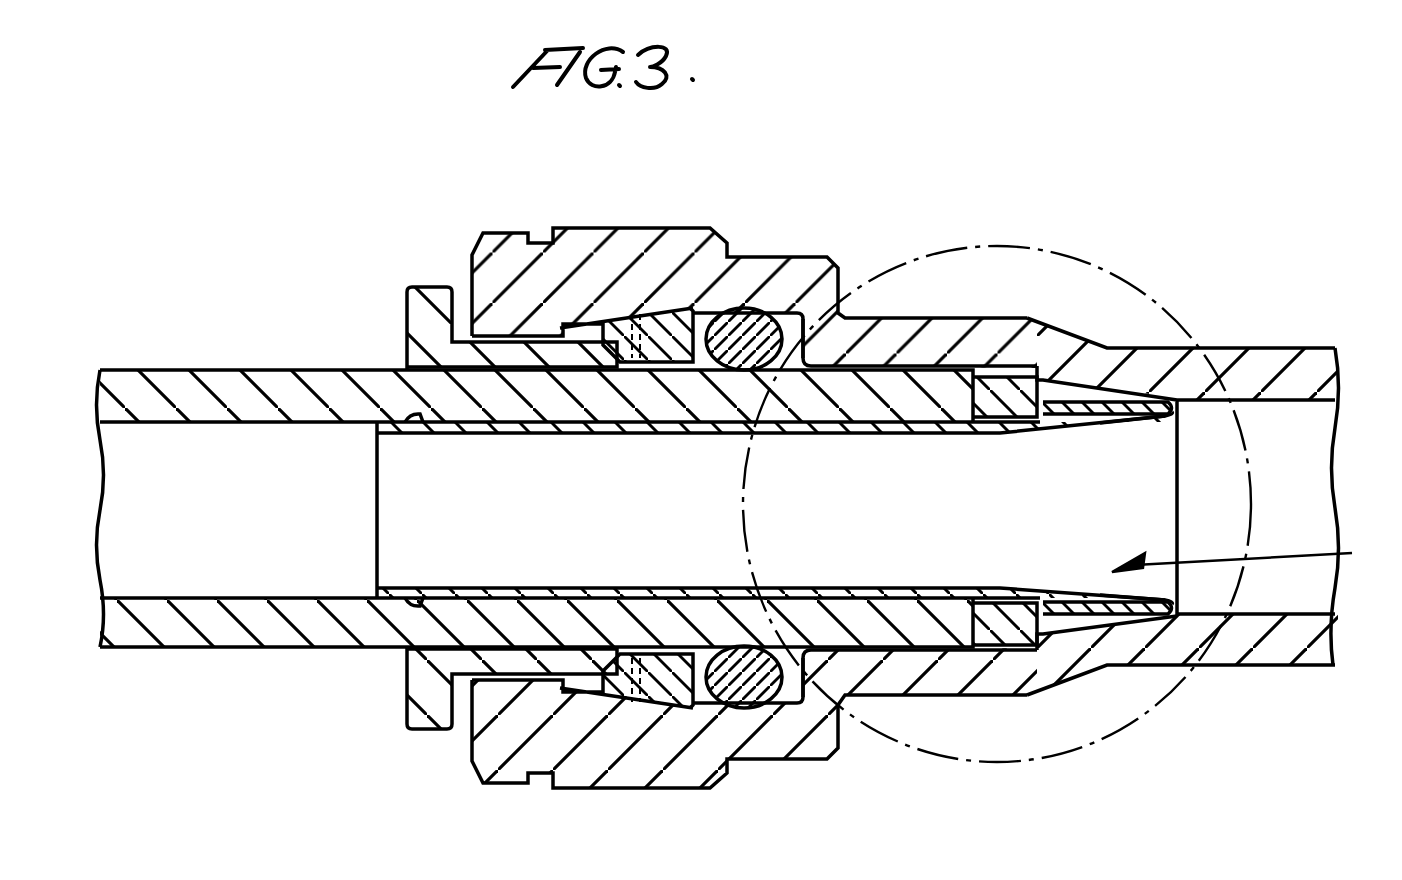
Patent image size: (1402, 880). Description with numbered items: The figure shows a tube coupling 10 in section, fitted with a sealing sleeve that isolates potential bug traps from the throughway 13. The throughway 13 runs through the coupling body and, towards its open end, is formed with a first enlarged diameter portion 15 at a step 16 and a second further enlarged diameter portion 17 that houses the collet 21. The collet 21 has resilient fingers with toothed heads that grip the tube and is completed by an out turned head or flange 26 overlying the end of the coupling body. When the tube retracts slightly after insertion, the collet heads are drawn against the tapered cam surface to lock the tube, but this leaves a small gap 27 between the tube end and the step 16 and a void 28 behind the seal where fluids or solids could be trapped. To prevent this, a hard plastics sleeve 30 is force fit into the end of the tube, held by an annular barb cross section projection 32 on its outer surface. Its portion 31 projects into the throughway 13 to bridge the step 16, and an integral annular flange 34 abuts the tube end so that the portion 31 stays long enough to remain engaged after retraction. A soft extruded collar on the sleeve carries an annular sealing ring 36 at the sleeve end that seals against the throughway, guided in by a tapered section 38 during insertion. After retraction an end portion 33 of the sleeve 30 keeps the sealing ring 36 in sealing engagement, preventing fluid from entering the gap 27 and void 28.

The tube coupling 10 is at (486, 224).
The throughway 13 is at (1287, 402).
The first enlarged diameter portion 15 is at (1003, 383).
The step 16 is at (1018, 377).
The second further enlarged diameter portion 17 is at (668, 305).
The collet 21 is at (405, 326).
The out turned head or flange 26 is at (757, 323).
The gap 27 is at (987, 377).
The void 28 is at (764, 334).
The sleeve 30 is at (562, 432).
The portion of the sleeve 31 is at (1098, 427).
The annular barb cross section projection 32 is at (415, 420).
The end portion of the sleeve 33 is at (1256, 560).
The annular flange 34 is at (1007, 623).
The annular sealing ring 36 is at (1172, 600).
The tapered section 38 is at (1050, 393).